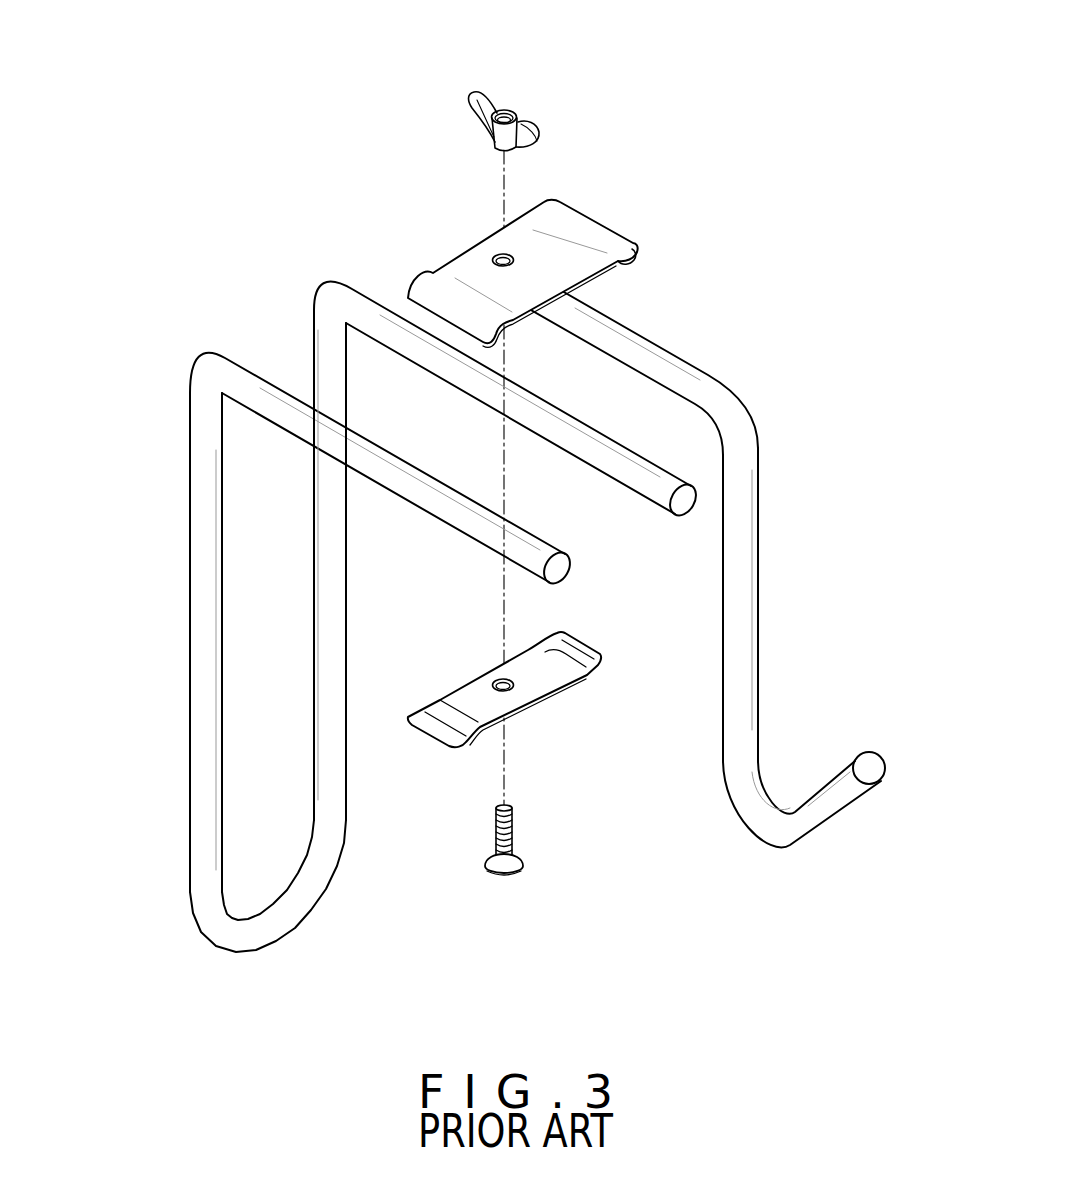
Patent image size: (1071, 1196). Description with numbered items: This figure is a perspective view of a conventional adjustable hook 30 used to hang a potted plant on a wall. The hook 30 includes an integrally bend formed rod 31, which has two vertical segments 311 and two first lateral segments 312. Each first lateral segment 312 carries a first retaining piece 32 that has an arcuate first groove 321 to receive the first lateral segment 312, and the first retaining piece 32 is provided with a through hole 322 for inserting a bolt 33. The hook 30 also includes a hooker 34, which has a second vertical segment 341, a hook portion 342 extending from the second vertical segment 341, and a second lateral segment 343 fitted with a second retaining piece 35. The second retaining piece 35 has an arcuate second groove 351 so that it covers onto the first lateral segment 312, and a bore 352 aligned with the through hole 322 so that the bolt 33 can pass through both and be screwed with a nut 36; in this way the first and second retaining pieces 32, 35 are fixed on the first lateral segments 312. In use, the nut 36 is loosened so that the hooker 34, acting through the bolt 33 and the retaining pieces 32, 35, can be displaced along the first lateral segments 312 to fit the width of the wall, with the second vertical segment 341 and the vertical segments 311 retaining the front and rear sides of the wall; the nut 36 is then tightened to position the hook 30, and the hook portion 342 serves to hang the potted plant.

The adjustable hook 30 is at (660, 172).
The rod 31 is at (204, 362).
The vertical segments 311 is at (203, 520).
The first lateral segments 312 is at (402, 487).
The first retaining piece 32 is at (538, 677).
The first groove 321 is at (585, 662).
The through hole 322 is at (507, 690).
The bolt 33 is at (513, 832).
The hooker 34 is at (763, 597).
The second vertical segment 341 is at (743, 667).
The hook portion 342 is at (840, 800).
The second lateral segment 343 is at (637, 347).
The second retaining piece 35 is at (475, 275).
The second groove 351 is at (630, 258).
The bore 352 is at (500, 253).
The nut 36 is at (510, 108).